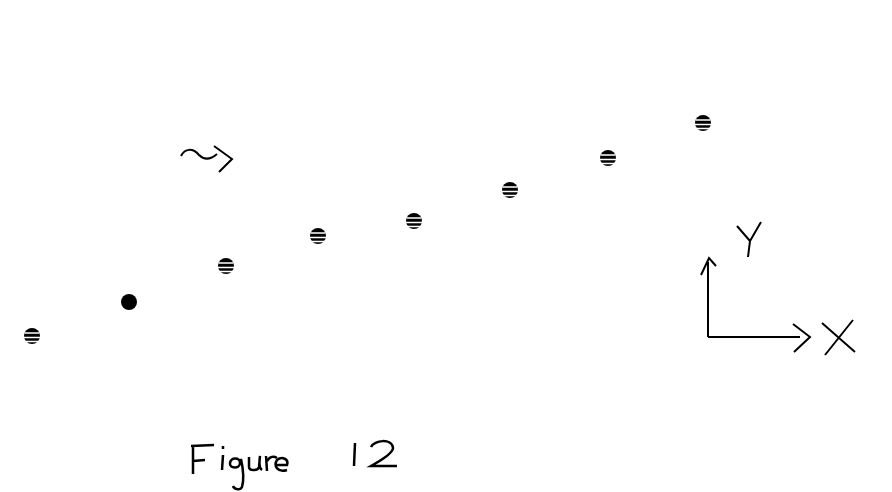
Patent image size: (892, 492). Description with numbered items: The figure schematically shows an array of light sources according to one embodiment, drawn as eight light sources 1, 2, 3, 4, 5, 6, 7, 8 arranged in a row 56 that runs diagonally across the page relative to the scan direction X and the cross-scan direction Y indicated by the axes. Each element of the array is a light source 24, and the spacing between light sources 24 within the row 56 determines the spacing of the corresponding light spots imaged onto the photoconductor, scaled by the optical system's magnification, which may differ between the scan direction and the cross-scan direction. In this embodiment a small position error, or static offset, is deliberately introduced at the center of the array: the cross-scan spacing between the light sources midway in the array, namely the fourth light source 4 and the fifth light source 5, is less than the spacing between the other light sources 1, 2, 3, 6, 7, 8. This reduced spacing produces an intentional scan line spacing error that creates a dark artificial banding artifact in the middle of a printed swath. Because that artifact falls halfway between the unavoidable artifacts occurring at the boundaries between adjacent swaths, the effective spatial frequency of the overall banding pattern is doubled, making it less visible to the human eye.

The first light source 1 is at (742, 130).
The second light source 2 is at (658, 175).
The third light source 3 is at (528, 208).
The fourth light source 4 is at (447, 242).
The fifth light source 5 is at (320, 274).
The sixth light source 6 is at (230, 300).
The seventh light source 7 is at (136, 339).
The eighth light source 8 is at (29, 373).
The light source 24 is at (703, 108).
The row of light sources 56 is at (93, 155).